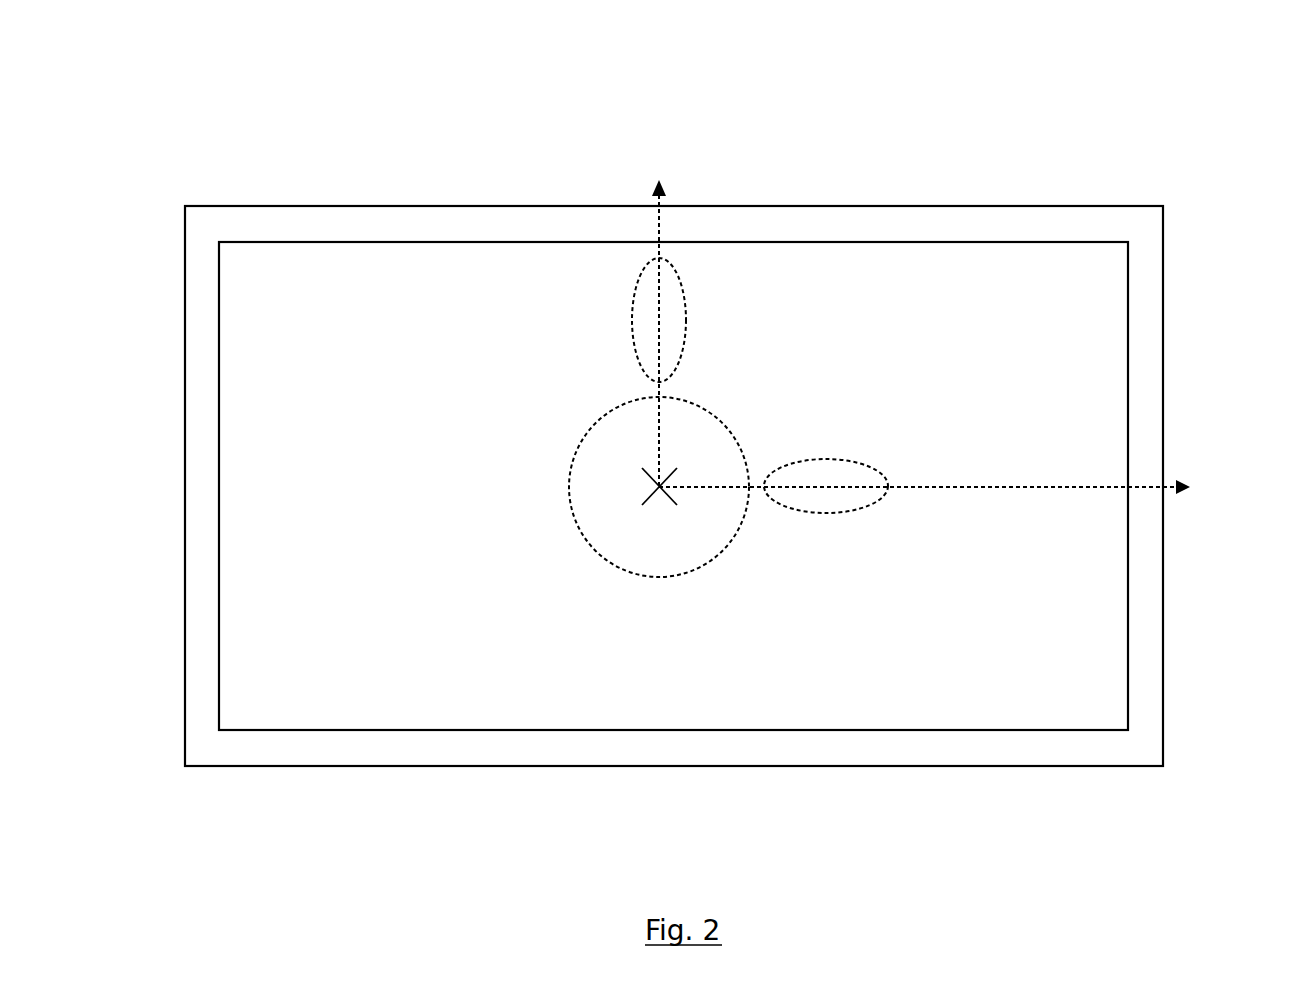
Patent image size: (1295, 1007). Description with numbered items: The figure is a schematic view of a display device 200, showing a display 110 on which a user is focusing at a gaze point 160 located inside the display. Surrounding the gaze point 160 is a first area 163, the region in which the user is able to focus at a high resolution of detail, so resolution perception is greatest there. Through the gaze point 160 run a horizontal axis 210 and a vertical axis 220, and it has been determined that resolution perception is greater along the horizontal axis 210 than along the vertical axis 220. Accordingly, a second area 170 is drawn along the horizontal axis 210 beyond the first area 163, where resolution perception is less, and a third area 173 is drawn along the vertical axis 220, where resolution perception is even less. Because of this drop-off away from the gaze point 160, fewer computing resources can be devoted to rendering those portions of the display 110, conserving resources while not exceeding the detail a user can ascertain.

The display device 200 is at (140, 108).
The display 110 is at (1063, 207).
The vertical axis 220 is at (659, 200).
The horizontal axis 210 is at (1135, 487).
The gaze point 160 is at (645, 500).
The first area 163 is at (743, 513).
The second area 170 is at (863, 507).
The third area 173 is at (683, 322).